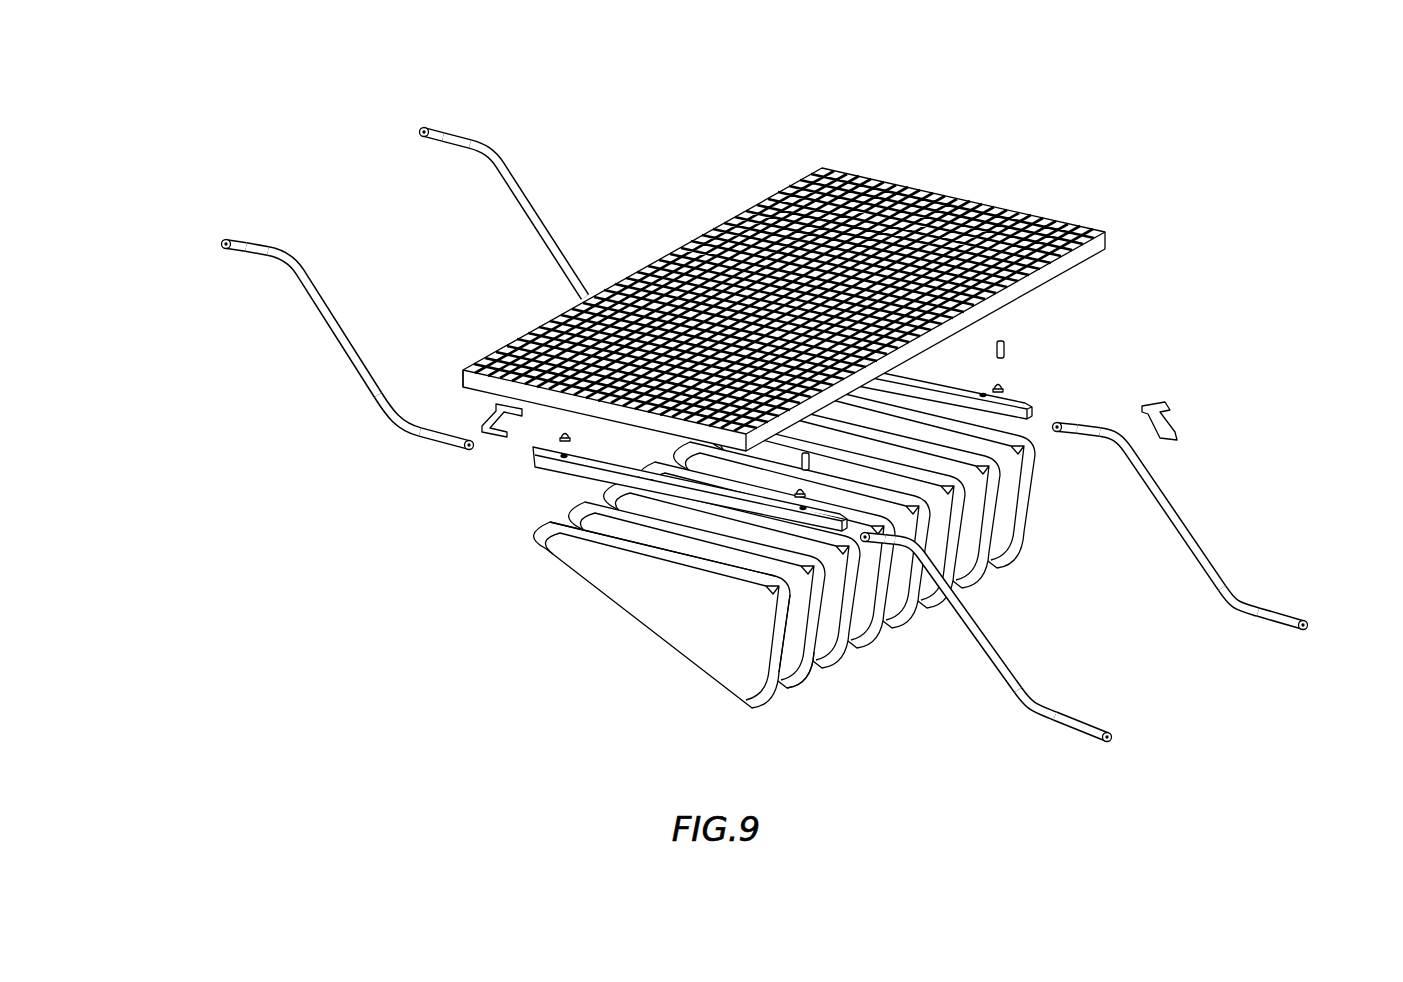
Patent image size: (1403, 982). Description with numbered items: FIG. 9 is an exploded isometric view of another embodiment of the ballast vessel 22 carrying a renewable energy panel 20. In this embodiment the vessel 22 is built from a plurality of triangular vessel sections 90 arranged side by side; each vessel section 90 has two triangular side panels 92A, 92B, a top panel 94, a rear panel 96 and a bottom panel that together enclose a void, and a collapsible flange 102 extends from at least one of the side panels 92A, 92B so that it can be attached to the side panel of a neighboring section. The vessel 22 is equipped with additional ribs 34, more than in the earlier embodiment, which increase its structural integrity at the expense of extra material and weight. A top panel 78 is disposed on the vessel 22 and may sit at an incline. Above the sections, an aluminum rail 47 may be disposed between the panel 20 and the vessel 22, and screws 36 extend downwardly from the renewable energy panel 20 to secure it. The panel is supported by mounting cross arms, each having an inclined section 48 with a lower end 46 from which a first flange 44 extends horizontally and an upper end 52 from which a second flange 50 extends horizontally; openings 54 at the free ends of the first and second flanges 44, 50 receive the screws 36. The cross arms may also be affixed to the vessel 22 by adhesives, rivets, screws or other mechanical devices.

The renewable energy panel 20 is at (970, 202).
The vessel 22 is at (798, 583).
The ribs 34 is at (966, 576).
The screws 36 is at (1008, 350).
The first flange 44 is at (1092, 731).
The lower end 46 is at (1045, 711).
The aluminum rail 47 is at (557, 471).
The inclined section 48 is at (993, 637).
The second flange 50 is at (1062, 425).
The upper end 52 is at (1113, 450).
The openings 54 is at (1098, 740).
The top panel 78 is at (730, 562).
The triangular vessel sections 90 is at (878, 630).
The triangular side panel 92A is at (650, 607).
The triangular side panel 92B is at (923, 517).
The top panel 94 is at (565, 520).
The rear panel 96 is at (780, 643).
The collapsible flange 102 is at (803, 683).